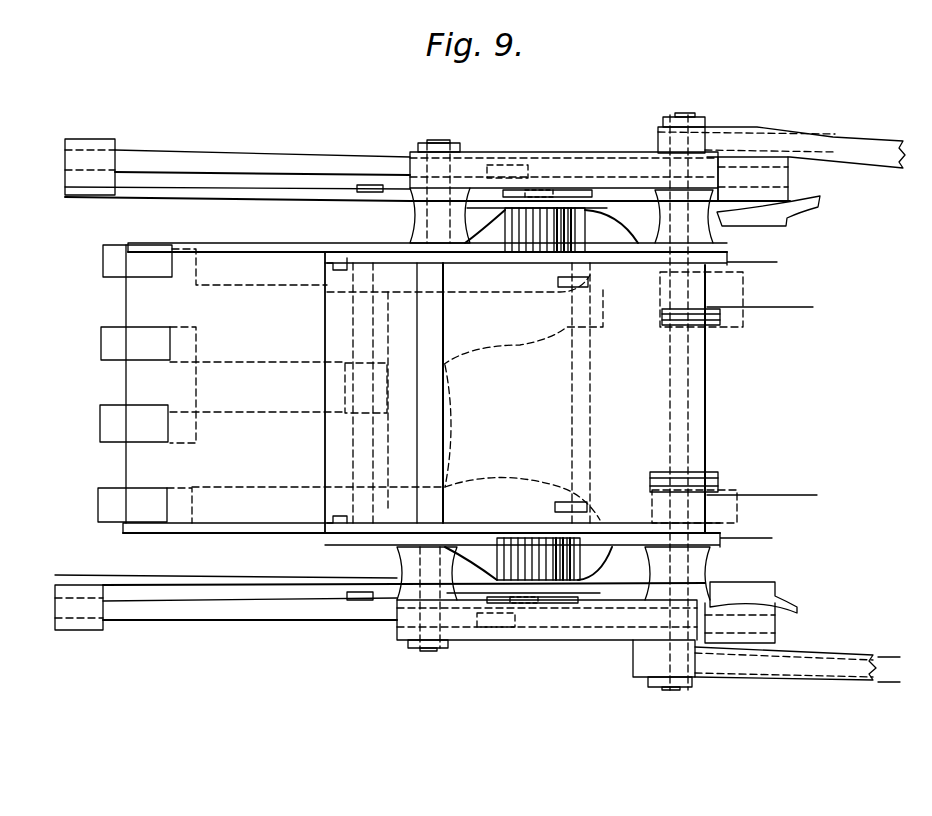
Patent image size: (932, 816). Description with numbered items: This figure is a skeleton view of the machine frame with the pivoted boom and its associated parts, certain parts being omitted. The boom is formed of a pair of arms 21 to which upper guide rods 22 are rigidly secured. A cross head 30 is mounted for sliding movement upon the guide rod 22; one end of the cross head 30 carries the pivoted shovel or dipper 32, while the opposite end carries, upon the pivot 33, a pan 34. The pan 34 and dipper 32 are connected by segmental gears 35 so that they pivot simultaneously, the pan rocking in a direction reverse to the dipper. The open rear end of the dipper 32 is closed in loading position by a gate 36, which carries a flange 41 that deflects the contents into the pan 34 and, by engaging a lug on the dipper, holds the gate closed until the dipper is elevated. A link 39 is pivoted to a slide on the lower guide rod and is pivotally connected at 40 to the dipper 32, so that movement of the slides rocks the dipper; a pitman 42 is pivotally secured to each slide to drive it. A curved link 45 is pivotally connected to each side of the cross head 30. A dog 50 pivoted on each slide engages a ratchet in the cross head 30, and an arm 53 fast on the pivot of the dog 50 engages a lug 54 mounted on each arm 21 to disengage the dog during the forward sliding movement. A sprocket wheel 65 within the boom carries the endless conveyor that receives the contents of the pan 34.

The arms 21 is at (288, 197).
The upper guide rod 22 is at (295, 158).
The cross head 30 is at (530, 152).
The shovel or dipper 32 is at (197, 242).
The pivot 33 is at (670, 690).
The pan 34 is at (443, 322).
The segmental gears 35 is at (540, 252).
The gate 36 is at (382, 348).
The link 39 is at (516, 340).
The pivotal connection 40 is at (325, 445).
The flange 41 is at (325, 320).
The pitman 42 is at (658, 130).
The curved link 45 is at (865, 147).
The dog 50 is at (492, 168).
The arm 53 is at (542, 193).
The lug 54 is at (370, 185).
The sprocket wheel 65 is at (717, 318).